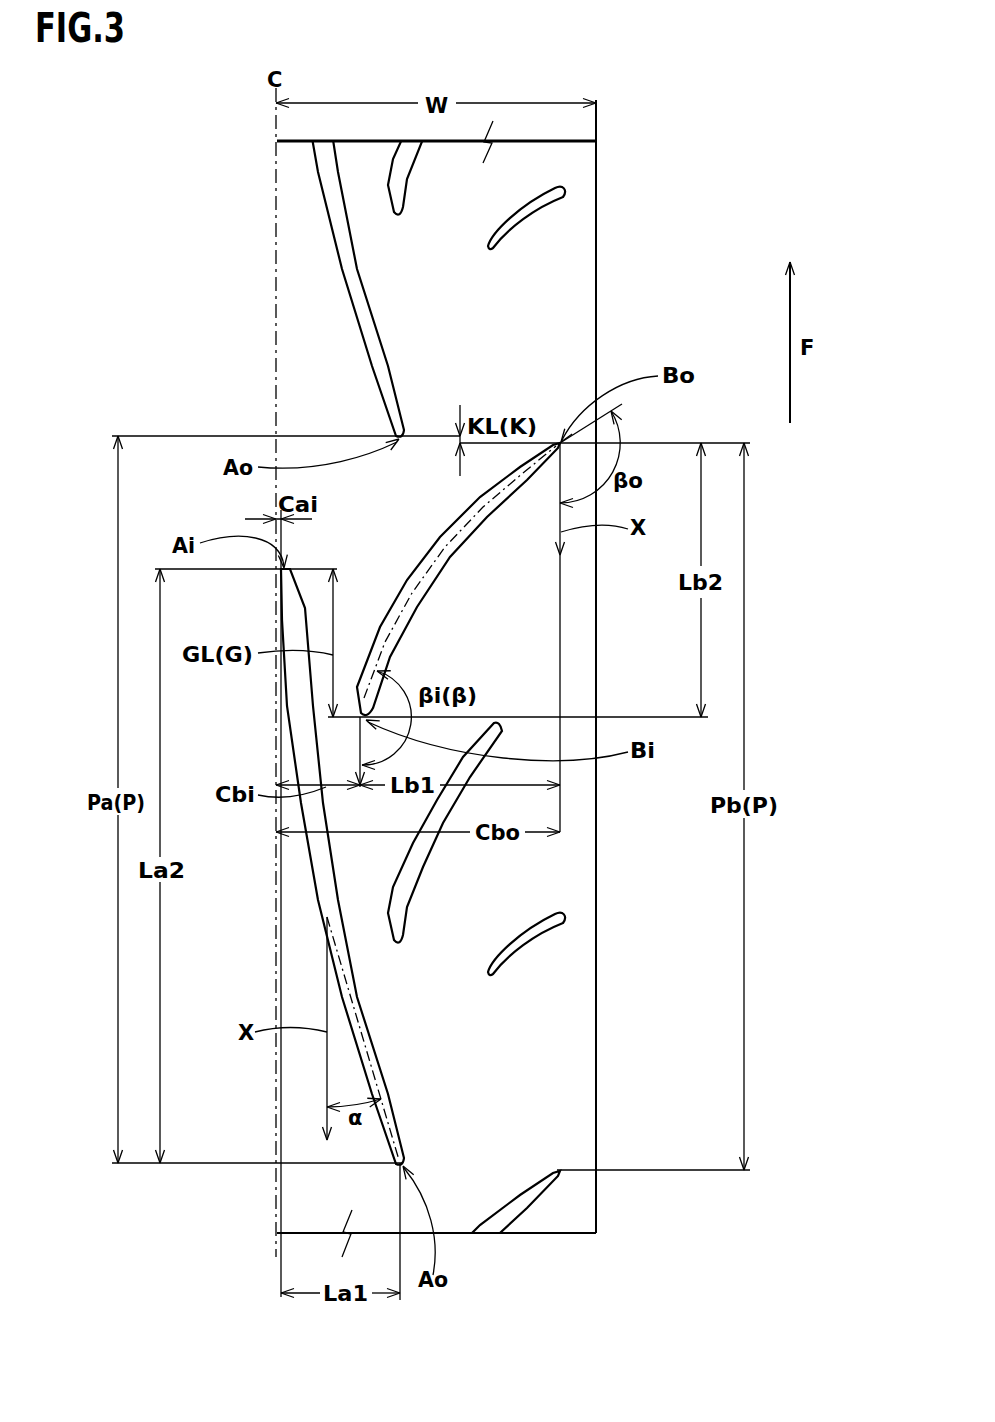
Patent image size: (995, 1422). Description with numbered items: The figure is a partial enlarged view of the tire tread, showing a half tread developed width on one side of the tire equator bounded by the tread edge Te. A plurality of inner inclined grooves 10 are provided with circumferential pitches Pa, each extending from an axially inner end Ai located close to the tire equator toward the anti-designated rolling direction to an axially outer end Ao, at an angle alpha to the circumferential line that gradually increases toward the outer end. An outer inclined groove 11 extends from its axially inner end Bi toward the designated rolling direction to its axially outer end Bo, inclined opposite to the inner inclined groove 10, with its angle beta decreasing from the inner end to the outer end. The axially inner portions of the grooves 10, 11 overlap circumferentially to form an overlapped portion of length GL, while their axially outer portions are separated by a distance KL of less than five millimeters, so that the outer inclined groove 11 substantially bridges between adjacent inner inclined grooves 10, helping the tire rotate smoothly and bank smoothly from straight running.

The inner inclined groove 10 is at (363, 362).
The outer inclined groove 11 is at (415, 593).
The trailing edge of band Te is at (597, 202).